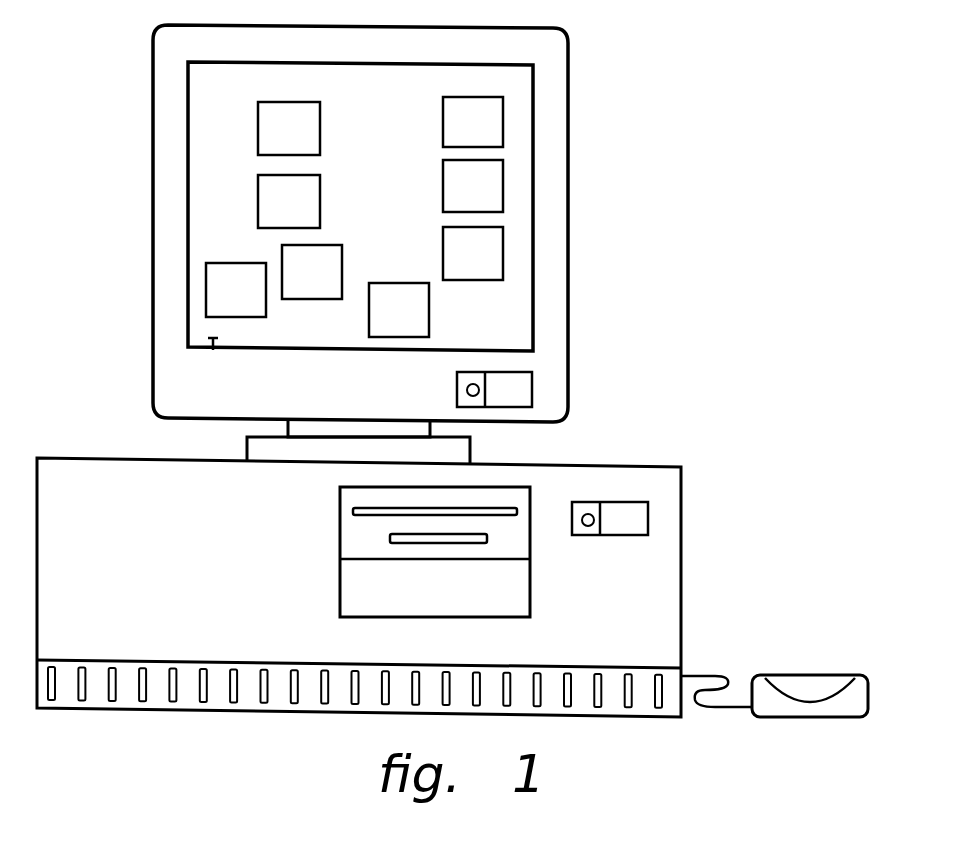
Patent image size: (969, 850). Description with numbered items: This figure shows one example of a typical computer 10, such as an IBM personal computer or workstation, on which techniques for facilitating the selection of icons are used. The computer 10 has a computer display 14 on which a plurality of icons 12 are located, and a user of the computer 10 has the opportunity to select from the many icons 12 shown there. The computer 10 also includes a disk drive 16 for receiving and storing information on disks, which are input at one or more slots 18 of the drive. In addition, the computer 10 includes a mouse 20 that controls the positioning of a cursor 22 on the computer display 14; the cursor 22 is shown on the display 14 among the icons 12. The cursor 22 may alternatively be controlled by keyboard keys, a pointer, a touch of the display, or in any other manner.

The computer 10 is at (632, 229).
The icons 12 is at (505, 127).
The computer display 14 is at (505, 305).
The disk drive 16 is at (518, 545).
The slots 18 is at (390, 538).
The mouse 20 is at (812, 682).
The cursor 22 is at (213, 348).